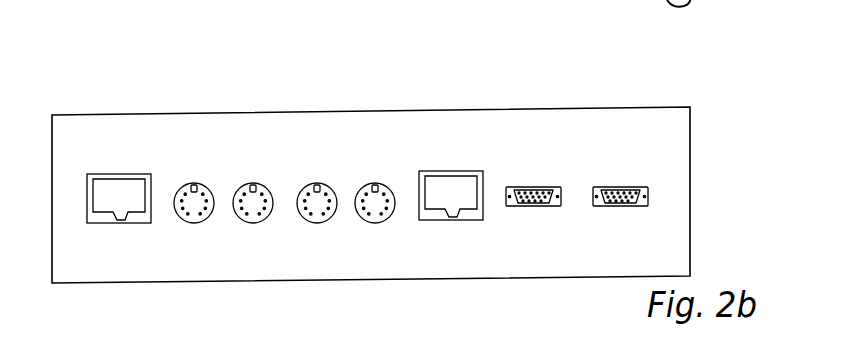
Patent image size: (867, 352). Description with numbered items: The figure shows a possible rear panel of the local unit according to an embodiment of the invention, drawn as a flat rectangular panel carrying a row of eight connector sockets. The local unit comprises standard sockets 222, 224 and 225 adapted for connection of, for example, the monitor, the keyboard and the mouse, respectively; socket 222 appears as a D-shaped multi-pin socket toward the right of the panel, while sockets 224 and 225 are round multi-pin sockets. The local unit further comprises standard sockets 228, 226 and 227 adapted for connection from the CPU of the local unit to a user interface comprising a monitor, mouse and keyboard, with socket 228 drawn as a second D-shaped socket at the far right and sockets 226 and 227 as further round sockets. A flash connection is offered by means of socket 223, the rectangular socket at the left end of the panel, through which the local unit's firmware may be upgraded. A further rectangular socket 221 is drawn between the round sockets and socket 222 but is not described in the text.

The network connector 221 is at (470, 171).
The standard socket 222 is at (527, 187).
The socket 223 is at (100, 175).
The standard socket 224 is at (253, 185).
The standard socket 225 is at (377, 184).
The standard socket 226 is at (194, 186).
The standard socket 227 is at (315, 184).
The standard socket 228 is at (598, 187).